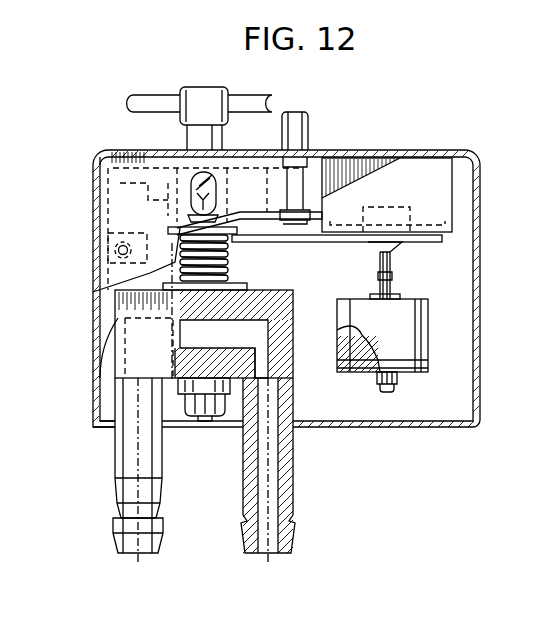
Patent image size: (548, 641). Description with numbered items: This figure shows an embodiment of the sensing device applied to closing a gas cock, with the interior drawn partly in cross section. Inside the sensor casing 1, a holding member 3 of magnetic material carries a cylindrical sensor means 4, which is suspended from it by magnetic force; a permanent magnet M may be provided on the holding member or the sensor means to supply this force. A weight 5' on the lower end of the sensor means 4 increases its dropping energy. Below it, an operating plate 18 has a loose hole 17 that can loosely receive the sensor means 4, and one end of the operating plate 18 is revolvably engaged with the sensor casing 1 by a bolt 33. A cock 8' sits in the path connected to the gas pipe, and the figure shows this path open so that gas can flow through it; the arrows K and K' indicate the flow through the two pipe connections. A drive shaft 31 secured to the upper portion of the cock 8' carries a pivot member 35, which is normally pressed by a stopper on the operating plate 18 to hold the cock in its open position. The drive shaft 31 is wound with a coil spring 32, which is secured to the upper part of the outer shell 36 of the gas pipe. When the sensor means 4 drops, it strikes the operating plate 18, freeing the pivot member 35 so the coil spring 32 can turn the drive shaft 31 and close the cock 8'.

The sensor casing 1 is at (481, 355).
The holding member 3 is at (453, 203).
The sensor means 4 is at (429, 337).
The weight 5' is at (361, 387).
The cock 8' is at (224, 355).
The loose hole 17 is at (400, 250).
The operating plate 18 is at (432, 242).
The drive shaft 31 is at (230, 262).
The coil spring 32 is at (248, 287).
The bolt 33 is at (115, 250).
The pivot member 35 is at (163, 190).
The outer shell 36 is at (124, 307).
The permanent magnet M is at (393, 207).
The flow inlet K is at (138, 487).
The flow outlet K' is at (268, 487).